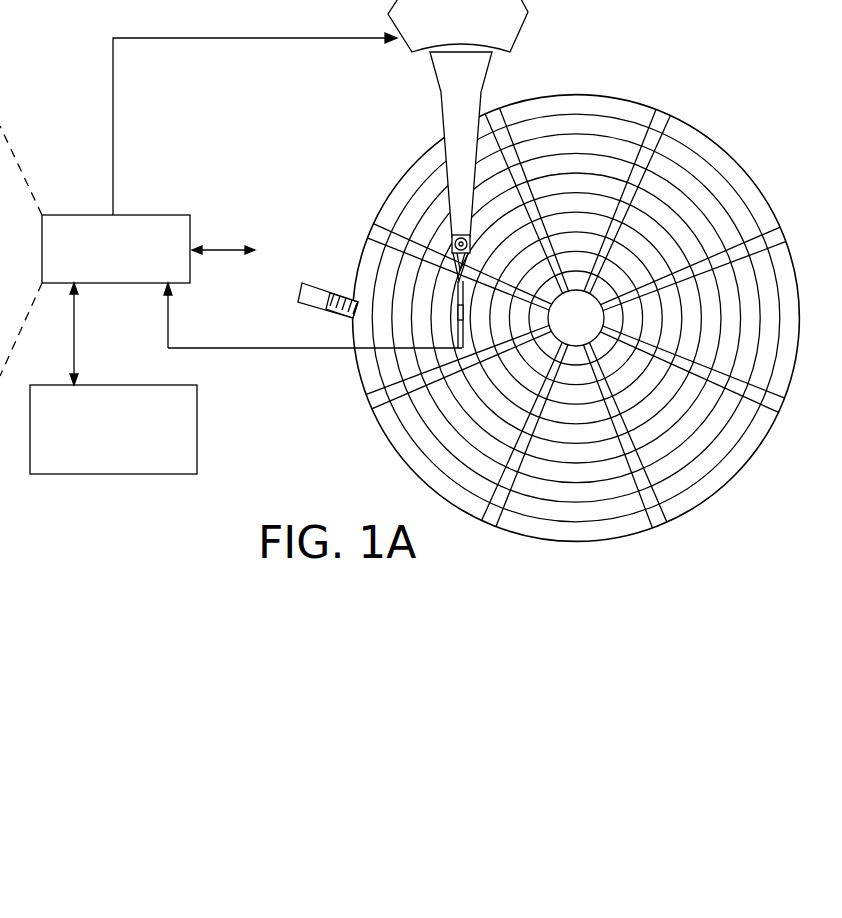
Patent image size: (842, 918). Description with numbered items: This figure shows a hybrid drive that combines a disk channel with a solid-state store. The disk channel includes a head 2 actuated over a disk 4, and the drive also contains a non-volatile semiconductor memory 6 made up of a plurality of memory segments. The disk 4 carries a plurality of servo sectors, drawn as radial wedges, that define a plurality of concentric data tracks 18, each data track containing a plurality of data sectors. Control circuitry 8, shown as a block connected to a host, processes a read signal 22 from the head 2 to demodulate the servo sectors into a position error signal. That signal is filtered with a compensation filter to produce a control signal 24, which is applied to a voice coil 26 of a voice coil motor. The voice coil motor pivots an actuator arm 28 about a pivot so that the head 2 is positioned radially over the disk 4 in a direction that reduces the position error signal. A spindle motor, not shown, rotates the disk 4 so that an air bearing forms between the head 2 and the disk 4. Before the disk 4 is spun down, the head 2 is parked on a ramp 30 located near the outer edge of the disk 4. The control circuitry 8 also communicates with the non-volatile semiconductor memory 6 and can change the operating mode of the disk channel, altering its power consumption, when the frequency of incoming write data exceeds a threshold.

The head 2 is at (456, 321).
The disk 4 is at (727, 151).
The non-volatile semiconductor memory 6 is at (197, 430).
The control circuitry 8 is at (155, 215).
The data tracks 18 is at (573, 128).
The read signal 22 is at (252, 349).
The control signal 24 is at (113, 112).
The voice coil 26 is at (404, 52).
The actuator arm 28 is at (443, 125).
The ramp 30 is at (327, 284).